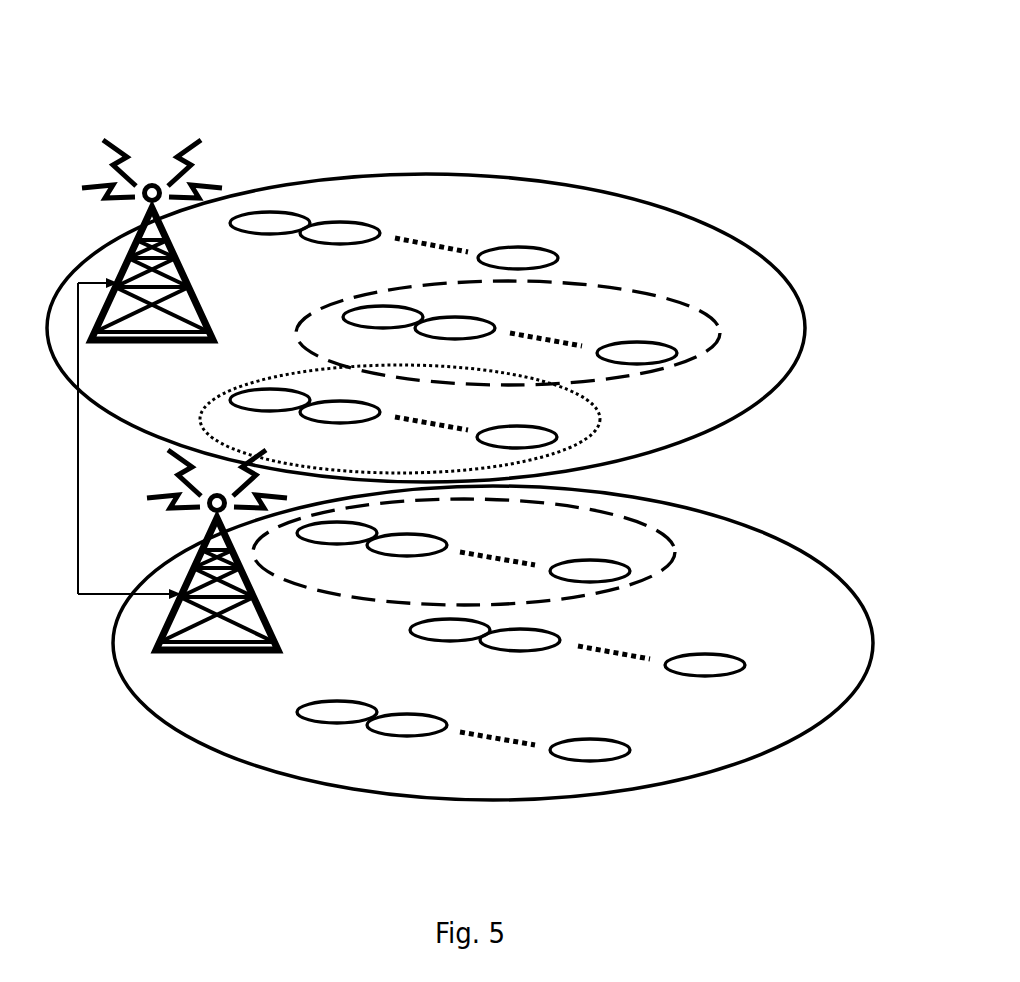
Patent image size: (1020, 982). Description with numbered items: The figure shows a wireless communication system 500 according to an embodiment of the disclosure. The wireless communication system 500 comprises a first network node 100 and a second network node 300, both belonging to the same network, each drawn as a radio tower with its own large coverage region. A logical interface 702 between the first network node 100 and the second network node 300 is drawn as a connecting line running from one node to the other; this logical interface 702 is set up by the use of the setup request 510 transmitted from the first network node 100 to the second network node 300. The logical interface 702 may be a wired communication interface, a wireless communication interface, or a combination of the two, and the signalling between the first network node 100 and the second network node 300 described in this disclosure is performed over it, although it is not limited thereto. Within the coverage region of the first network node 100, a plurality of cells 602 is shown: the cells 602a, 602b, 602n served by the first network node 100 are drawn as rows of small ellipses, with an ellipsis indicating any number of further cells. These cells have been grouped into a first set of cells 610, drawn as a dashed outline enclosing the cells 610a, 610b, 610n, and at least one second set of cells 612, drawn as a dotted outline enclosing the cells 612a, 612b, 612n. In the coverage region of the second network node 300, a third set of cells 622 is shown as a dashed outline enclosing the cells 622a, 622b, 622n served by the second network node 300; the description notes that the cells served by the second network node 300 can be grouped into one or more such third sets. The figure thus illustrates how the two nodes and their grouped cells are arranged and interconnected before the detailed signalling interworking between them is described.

The wireless communication system 500 is at (177, 36).
The first network node 100 is at (135, 347).
The second network node 300 is at (200, 655).
The logical interface 702 is at (92, 438).
The setup request 510 is at (92, 579).
The cells 602 is at (426, 280).
The cell 602a is at (270, 223).
The cell 602b is at (340, 233).
The cell 602n is at (518, 258).
The first set of cells 610 is at (556, 267).
The cell of first set 610a is at (383, 317).
The cell of first set 610b is at (455, 328).
The cell of first set 610n is at (637, 353).
The second set of cells 612 is at (561, 425).
The cell of second set 612a is at (270, 400).
The cell of second set 612b is at (340, 412).
The cell of second set 612n is at (517, 437).
The third set of cells 622 is at (540, 669).
The cell of third set 622a is at (337, 533).
The cell of third set 622b is at (407, 545).
The cell of third set 622n is at (590, 571).